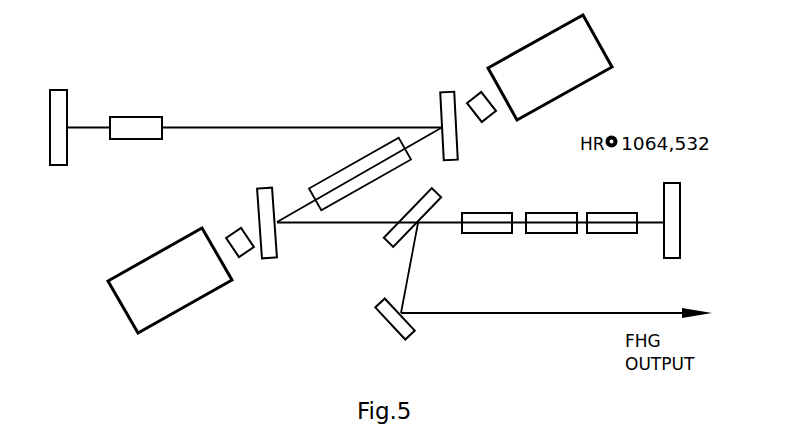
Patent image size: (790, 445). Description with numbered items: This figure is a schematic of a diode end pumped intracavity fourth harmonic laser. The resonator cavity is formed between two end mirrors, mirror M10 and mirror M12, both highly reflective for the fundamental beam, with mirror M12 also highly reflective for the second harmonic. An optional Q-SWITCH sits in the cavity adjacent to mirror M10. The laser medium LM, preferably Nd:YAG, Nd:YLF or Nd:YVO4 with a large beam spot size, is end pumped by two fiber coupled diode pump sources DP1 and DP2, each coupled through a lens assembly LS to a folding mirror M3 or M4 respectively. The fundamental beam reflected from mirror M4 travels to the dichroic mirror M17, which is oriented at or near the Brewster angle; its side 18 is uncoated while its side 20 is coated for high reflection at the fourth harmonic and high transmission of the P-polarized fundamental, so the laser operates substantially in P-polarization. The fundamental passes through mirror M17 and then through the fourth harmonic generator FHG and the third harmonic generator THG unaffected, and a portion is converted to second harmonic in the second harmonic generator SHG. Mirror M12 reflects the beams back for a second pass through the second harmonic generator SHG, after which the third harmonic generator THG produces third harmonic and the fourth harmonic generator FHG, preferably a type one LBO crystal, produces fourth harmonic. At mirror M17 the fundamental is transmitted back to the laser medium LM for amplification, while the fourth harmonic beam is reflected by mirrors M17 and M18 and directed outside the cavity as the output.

The reflecting mirror M10 is at (65, 116).
The Q-switch Q-SWITCH is at (152, 116).
The folding mirror M3 is at (449, 114).
The lens assembly LS is at (359, 174).
The diode pump source DP1 is at (562, 67).
The diode pump source DP2 is at (159, 280).
The laser medium LM is at (360, 174).
The folding mirror M4 is at (264, 210).
The side of mirror M17 18 is at (344, 214).
The side of mirror M17 20 is at (538, 214).
The dichroic mirror M17 is at (427, 207).
The mirror M18 is at (404, 335).
The fourth harmonic generator FHG is at (487, 210).
The third harmonic generator THG is at (550, 210).
The second harmonic generator SHG is at (612, 210).
The reflecting mirror M12 is at (680, 211).